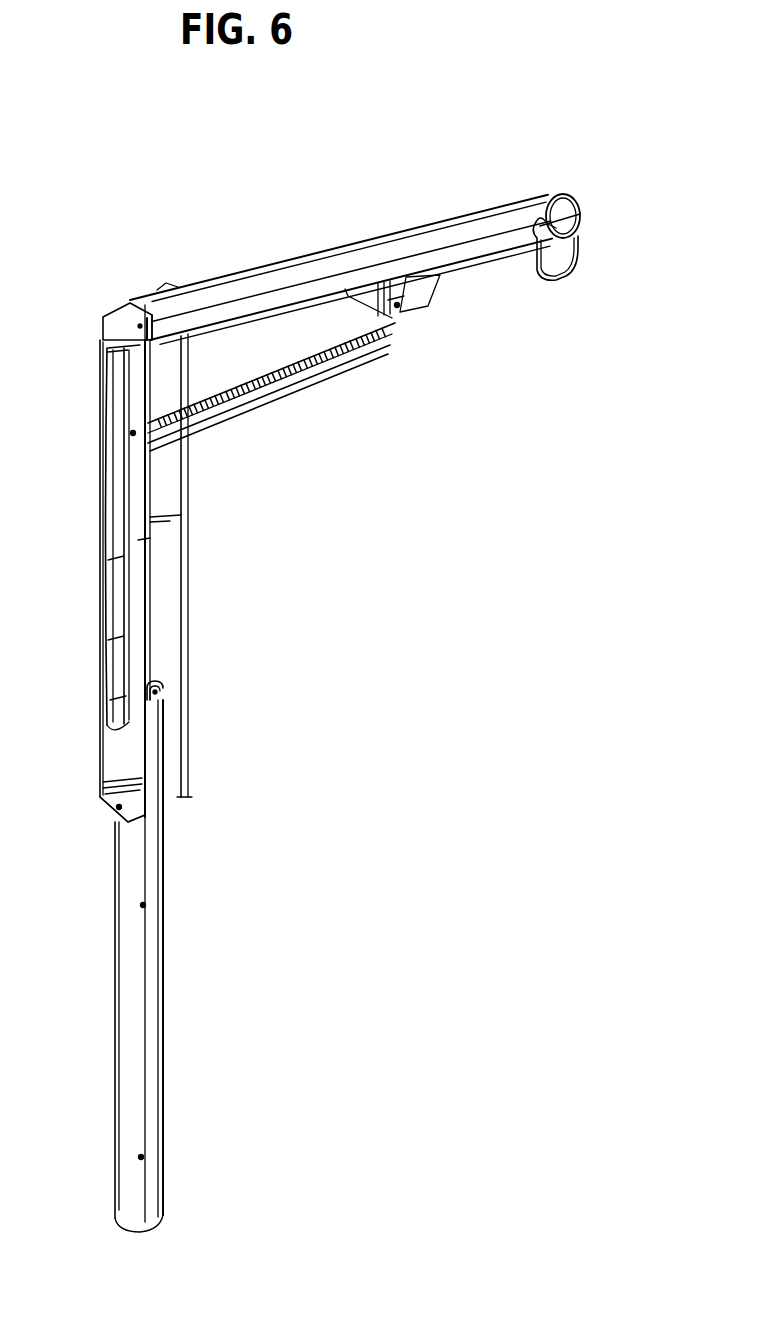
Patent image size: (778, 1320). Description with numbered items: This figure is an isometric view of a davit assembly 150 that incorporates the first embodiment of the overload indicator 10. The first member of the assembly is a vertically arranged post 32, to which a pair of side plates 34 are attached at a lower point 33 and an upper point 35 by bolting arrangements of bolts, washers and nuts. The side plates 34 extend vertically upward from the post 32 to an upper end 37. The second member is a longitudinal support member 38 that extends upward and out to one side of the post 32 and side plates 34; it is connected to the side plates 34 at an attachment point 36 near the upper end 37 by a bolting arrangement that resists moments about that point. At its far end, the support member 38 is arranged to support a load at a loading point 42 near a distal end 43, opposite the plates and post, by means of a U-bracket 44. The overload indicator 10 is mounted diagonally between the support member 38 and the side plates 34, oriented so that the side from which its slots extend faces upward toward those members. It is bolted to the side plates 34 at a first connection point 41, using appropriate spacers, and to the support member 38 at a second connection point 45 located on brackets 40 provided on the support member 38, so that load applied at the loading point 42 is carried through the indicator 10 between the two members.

The overload indicator 10 is at (266, 387).
The post 32 is at (125, 1030).
The attachment point 33 is at (115, 808).
The side plates 34 is at (133, 768).
The attachment point 35 is at (104, 716).
The attachment point 36 is at (140, 326).
The upper end 37 is at (136, 318).
The longitudinal support member 38 is at (296, 278).
The brackets 40 is at (408, 297).
The first connection point 41 is at (130, 435).
The loading point 42 is at (580, 212).
The distal end 43 is at (583, 232).
The U-bracket 44 is at (560, 278).
The second connection point 45 is at (397, 308).
The davit assembly 150 is at (304, 890).